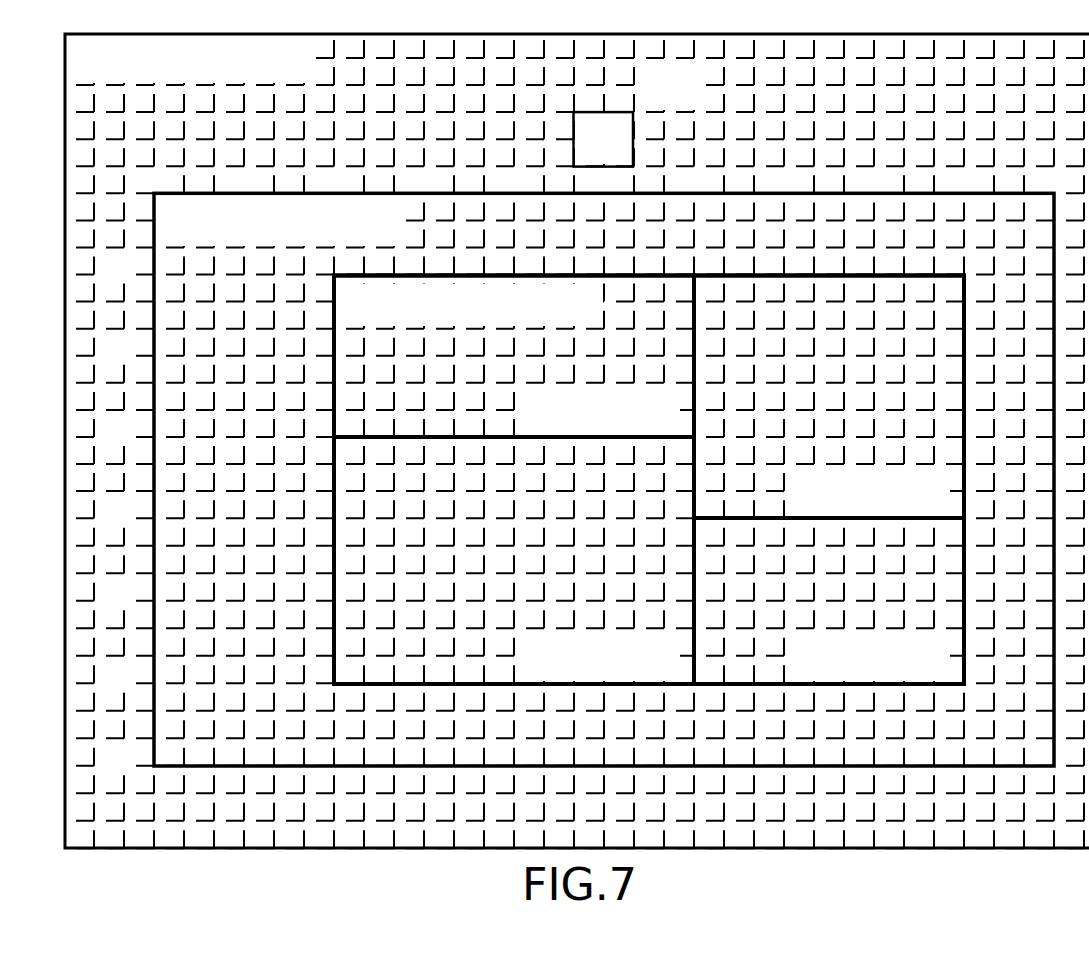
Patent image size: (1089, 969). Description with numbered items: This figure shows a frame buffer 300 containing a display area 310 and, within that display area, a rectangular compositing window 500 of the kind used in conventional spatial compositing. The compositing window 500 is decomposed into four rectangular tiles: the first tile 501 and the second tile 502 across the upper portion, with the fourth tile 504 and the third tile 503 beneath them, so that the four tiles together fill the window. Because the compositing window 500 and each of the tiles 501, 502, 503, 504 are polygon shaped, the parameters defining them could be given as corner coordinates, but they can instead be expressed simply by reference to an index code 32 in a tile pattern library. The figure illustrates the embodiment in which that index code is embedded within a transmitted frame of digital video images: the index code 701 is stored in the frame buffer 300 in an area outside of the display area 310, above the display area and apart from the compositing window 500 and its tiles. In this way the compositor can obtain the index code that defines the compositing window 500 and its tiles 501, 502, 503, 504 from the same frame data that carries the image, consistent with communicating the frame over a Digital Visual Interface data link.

The frame buffer 300 is at (272, 74).
The display area 310 is at (358, 234).
The compositing window 500 is at (588, 318).
The tile #1 501 is at (670, 427).
The tile #2 502 is at (945, 508).
The tile #3 503 is at (945, 669).
The tile #4 504 is at (670, 669).
The index code 32 is at (616, 152).
The index code 701 is at (697, 97).